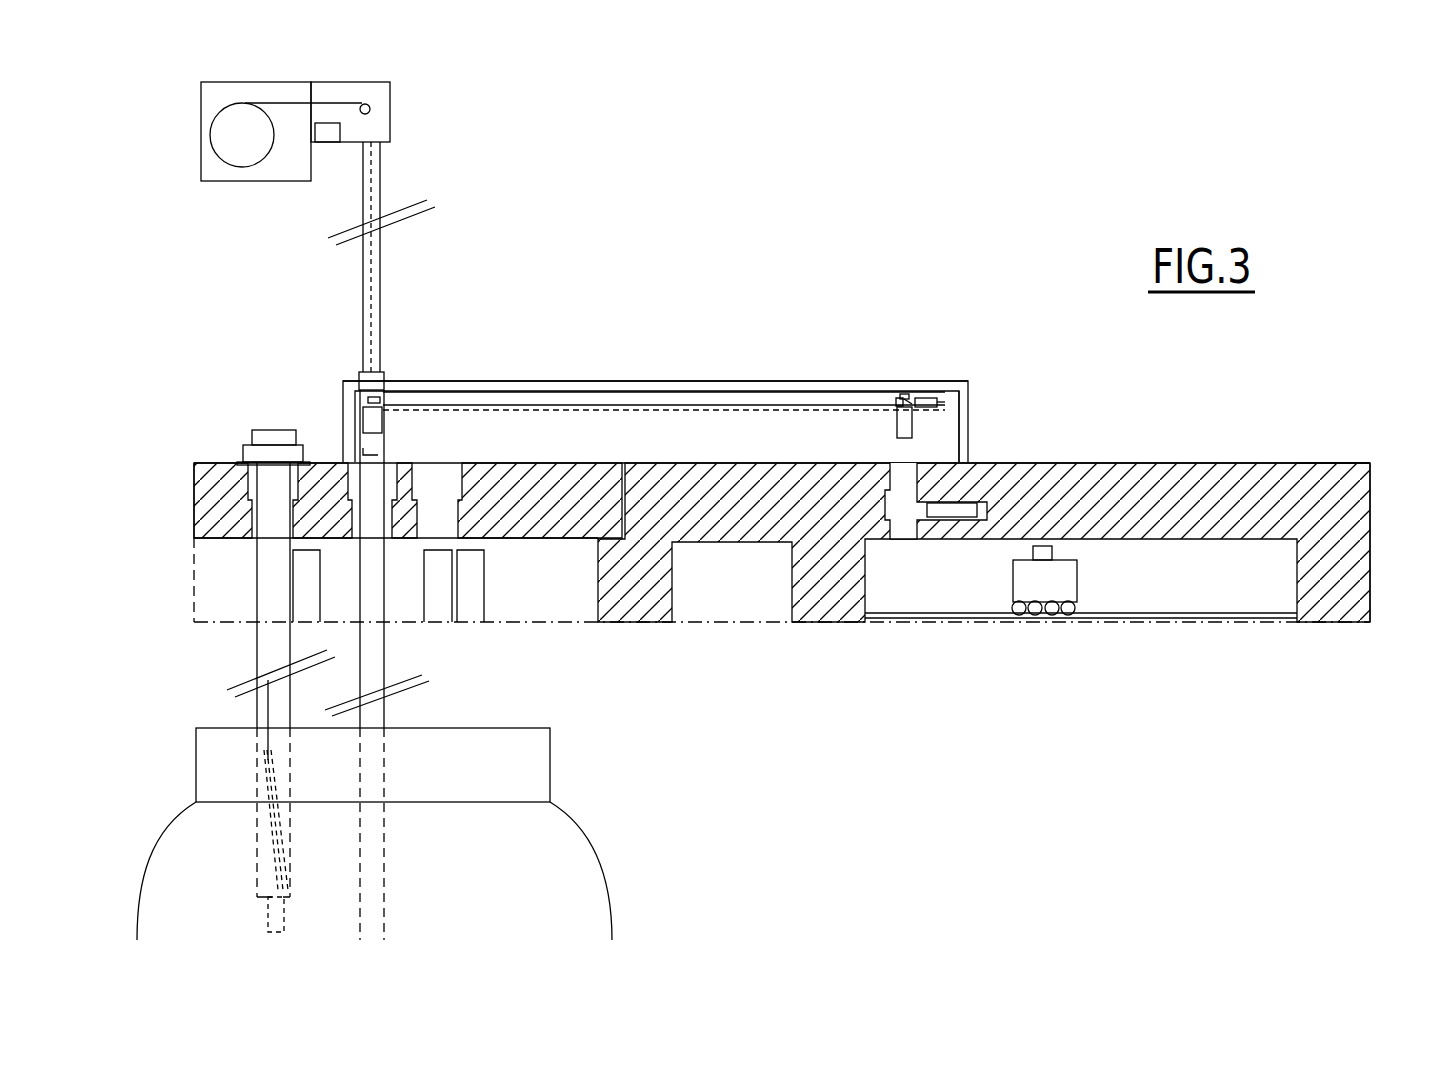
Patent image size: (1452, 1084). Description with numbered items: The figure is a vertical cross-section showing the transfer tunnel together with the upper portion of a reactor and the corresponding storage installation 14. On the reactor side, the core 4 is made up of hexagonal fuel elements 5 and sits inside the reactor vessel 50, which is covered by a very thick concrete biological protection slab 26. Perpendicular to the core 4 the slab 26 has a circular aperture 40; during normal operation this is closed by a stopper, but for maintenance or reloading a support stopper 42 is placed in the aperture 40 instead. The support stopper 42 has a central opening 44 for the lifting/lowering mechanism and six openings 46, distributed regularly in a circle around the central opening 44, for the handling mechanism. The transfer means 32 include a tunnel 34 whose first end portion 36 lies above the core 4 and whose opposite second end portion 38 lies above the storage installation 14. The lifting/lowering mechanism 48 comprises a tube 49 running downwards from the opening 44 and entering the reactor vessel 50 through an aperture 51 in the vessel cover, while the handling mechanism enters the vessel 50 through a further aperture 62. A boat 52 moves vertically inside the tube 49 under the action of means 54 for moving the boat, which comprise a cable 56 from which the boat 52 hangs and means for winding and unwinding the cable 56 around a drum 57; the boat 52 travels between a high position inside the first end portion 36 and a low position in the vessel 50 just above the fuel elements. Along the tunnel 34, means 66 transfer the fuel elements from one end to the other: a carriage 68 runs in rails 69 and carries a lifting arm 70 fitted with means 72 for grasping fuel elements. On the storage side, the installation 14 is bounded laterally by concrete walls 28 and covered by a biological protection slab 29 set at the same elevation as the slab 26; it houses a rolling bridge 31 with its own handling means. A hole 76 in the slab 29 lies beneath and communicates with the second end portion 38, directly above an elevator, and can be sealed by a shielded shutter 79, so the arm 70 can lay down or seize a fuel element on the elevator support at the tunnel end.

The core 4 is at (170, 775).
The fuel element 5 is at (378, 420).
The storage installation 14 is at (1178, 588).
The biological protection slab 26 is at (645, 495).
The concrete wall 28 is at (1340, 602).
The biological protection slab 29 is at (1300, 490).
The rolling bridge 31 is at (1050, 584).
The means for transferring fuel elements 32 is at (990, 358).
The tunnel 34 is at (500, 386).
The first end portion 36 is at (420, 386).
The second end portion 38 is at (965, 438).
The circular aperture 40 is at (600, 520).
The support stopper 42 is at (225, 490).
The central opening 44 is at (353, 525).
The opening 46 is at (265, 525).
The lifting/lowering mechanism 48 is at (397, 185).
The tube 49 is at (386, 590).
The reactor vessel 50 is at (556, 868).
The aperture 51 is at (383, 728).
The boat 52 is at (365, 412).
The means for moving the boat 54 is at (417, 240).
The cable 56 is at (376, 297).
The drum 57 is at (238, 148).
The aperture 62 is at (280, 730).
The means for transferring fuel elements along the tunnel 66 is at (932, 393).
The carriage 68 is at (945, 402).
The rails 69 is at (652, 404).
The lifting arm 70 is at (905, 395).
The means for grasping fuel elements 72 is at (898, 397).
The hole 76 is at (905, 530).
The shielded shutter 79 is at (960, 510).